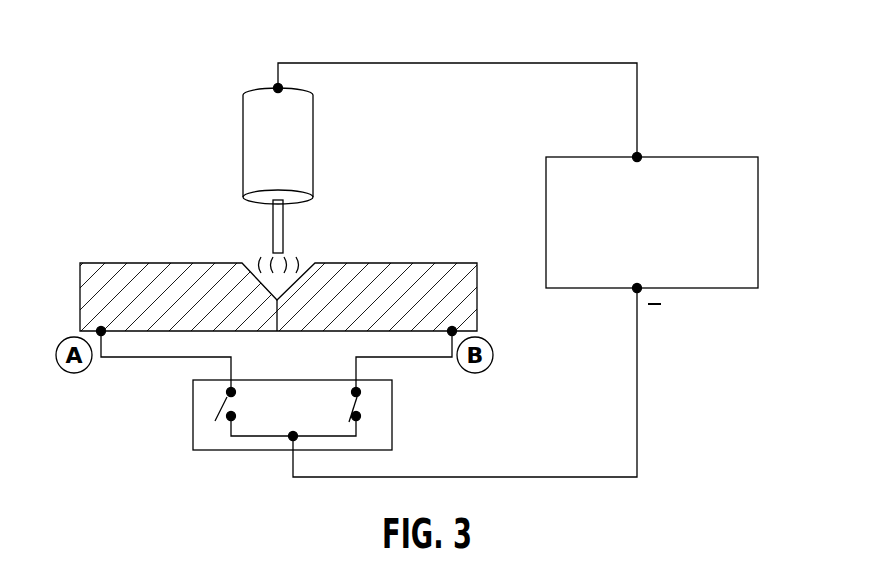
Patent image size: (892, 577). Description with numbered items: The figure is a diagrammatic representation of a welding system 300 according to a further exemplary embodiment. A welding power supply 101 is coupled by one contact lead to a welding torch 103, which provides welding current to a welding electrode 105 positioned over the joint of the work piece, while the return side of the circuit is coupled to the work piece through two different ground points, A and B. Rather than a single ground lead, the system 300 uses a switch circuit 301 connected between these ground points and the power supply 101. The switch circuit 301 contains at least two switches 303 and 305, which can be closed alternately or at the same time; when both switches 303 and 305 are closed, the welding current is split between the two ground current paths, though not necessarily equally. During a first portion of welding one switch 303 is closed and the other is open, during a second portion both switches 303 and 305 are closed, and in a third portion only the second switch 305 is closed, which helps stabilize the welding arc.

The welding system 300 is at (108, 113).
The welding torch 103 is at (293, 137).
The welding electrode 105 is at (282, 232).
The welding power supply 101 is at (596, 157).
The switch circuit 301 is at (331, 397).
The switch 303 is at (351, 410).
The second switch 305 is at (236, 415).